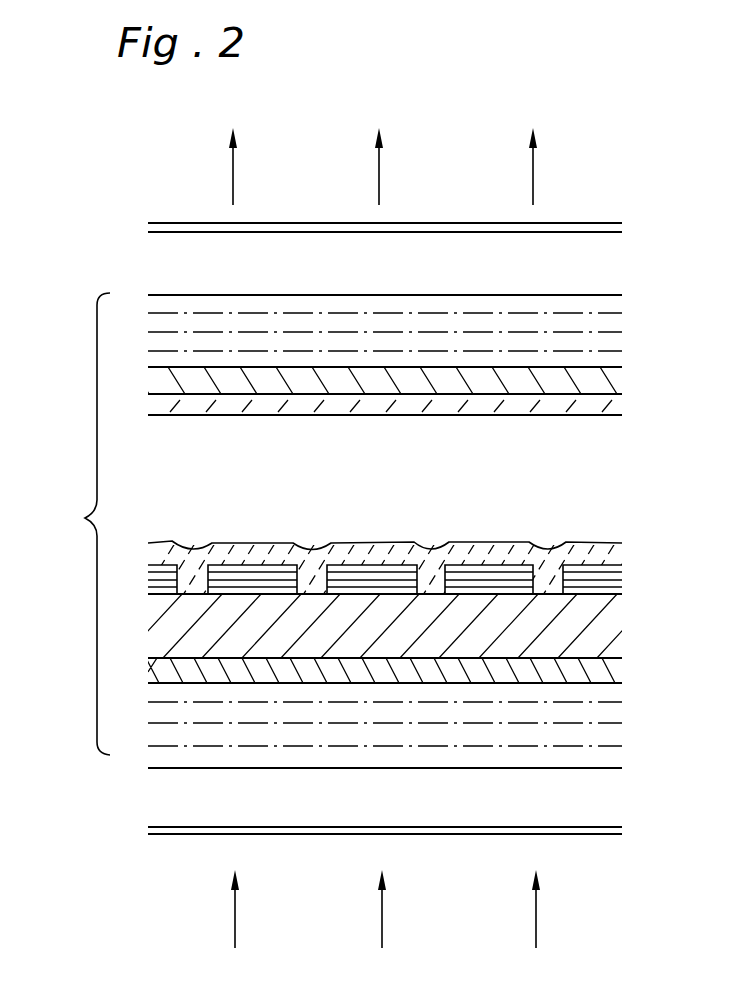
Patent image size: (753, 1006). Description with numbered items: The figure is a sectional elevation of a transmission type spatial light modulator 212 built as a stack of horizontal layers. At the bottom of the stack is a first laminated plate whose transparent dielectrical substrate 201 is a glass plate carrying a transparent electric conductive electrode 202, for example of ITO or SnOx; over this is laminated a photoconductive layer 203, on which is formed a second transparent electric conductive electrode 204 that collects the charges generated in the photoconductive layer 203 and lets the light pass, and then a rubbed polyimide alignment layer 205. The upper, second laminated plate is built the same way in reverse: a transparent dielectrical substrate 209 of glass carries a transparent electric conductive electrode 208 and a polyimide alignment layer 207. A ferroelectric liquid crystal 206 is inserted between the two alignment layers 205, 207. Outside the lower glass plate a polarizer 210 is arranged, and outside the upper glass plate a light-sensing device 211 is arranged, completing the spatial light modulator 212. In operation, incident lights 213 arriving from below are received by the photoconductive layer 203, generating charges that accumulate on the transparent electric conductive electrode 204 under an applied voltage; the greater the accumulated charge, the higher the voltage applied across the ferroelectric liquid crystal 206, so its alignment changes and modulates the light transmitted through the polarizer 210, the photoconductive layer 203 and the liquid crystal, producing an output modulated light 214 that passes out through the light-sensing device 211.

The transparent dielectrical substrate 201 is at (622, 722).
The transparent electric conductive electrode 202 is at (615, 670).
The photoconductive layer 203 is at (613, 624).
The transparent electric conductive electrode 204 is at (622, 580).
The alignment layer 205 is at (622, 548).
The ferroelectric liquid crystal 206 is at (605, 486).
The alignment layer 207 is at (615, 401).
The transparent electric conductive electrode 208 is at (615, 366).
The transparent dielectrical substrate 209 is at (622, 314).
The polarizer 210 is at (622, 830).
The light-sensing device 211 is at (622, 222).
The spatial light modulator 212 is at (62, 524).
The incident lights 213 is at (429, 909).
The output modulated light 214 is at (419, 166).